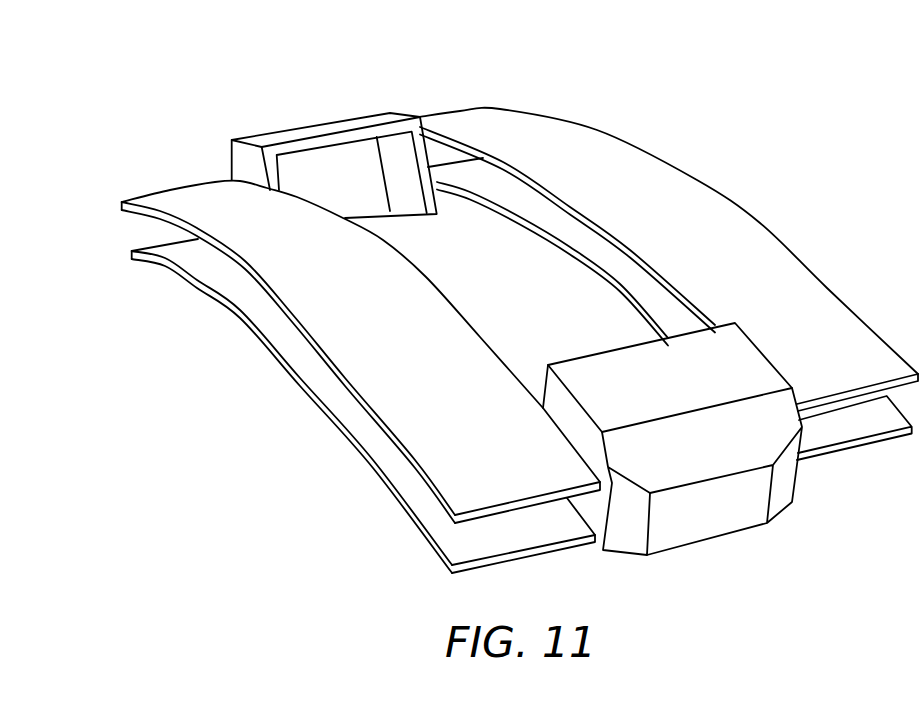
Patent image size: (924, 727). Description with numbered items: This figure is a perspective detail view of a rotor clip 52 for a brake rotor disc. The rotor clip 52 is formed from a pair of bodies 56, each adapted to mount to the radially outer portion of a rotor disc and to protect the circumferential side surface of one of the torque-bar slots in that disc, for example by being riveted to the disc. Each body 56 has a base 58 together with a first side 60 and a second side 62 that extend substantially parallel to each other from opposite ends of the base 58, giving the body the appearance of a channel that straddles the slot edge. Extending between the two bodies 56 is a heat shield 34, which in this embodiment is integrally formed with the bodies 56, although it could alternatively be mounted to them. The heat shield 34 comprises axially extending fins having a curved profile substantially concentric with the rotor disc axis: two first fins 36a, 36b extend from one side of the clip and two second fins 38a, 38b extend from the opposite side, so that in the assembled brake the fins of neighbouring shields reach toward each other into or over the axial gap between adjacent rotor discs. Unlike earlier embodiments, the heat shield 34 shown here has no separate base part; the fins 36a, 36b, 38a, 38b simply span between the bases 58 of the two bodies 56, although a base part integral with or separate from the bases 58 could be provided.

The heat shield 34 is at (283, 469).
The first fin 36a is at (273, 322).
The first fin 36b is at (410, 290).
The second fin 38a is at (537, 210).
The second fin 38b is at (650, 172).
The rotor clip 52 is at (160, 88).
The body 56 is at (285, 128).
The base 58 is at (347, 123).
The first side 60 is at (236, 160).
The second side 62 is at (430, 148).